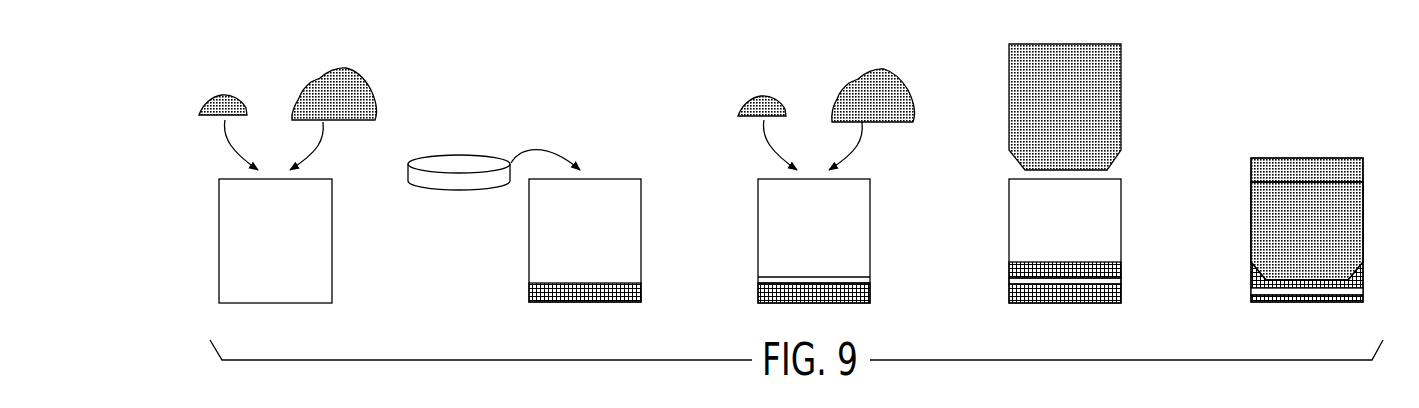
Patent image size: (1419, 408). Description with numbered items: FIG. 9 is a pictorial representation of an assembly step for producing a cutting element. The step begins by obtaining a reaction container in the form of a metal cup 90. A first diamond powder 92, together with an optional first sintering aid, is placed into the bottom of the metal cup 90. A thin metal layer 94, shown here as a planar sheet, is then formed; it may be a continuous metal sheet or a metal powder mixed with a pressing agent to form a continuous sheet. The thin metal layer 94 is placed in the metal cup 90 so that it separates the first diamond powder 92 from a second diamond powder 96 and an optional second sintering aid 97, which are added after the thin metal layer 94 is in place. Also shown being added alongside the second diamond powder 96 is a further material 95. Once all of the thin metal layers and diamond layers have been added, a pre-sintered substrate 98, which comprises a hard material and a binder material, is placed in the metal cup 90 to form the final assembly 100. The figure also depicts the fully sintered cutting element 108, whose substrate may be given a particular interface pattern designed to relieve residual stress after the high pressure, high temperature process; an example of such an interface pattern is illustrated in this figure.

The metal cup 90 is at (218, 227).
The first diamond powder 92 is at (341, 80).
The thin metal layer 94 is at (225, 98).
The third material 95 is at (880, 80).
The second diamond powder 96 is at (1108, 270).
The second sintering aid 97 is at (762, 99).
The pre-sintered substrate 98 is at (463, 162).
The final assembly 100 is at (1348, 142).
The fully sintered cutting element 108 is at (1108, 92).